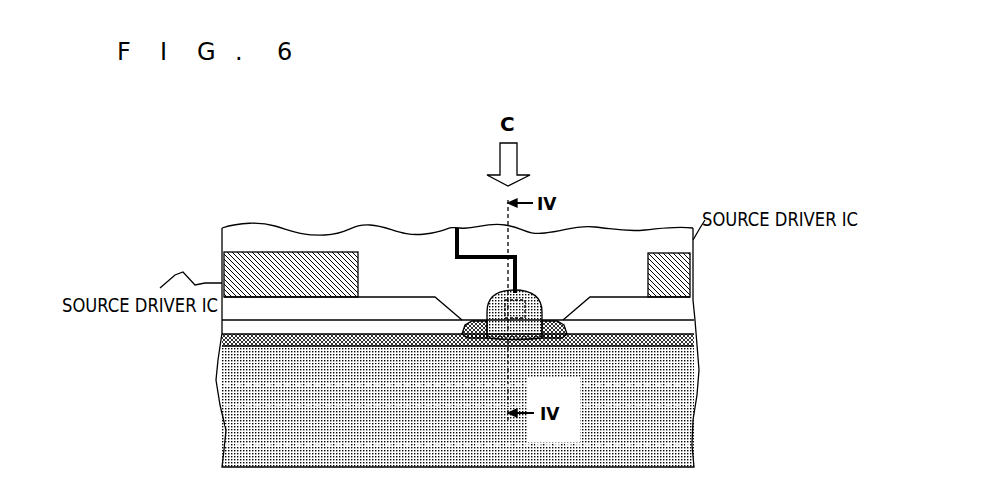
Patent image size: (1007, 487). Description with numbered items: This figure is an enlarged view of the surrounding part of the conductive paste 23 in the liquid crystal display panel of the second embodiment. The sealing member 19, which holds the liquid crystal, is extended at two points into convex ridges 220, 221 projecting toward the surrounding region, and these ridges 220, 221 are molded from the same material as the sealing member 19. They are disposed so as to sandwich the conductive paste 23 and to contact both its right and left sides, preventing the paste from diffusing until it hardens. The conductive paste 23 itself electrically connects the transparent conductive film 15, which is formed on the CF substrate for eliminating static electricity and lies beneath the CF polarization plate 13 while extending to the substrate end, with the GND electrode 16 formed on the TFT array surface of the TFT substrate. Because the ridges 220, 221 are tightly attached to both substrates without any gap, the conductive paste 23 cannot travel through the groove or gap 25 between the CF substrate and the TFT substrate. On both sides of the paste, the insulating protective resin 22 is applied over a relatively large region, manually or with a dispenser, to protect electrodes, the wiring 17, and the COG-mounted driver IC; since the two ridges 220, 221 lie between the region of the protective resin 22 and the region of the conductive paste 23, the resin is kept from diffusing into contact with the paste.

The CF polarization plate 13 is at (488, 406).
The transparent conductive film 15 is at (491, 297).
The GND electrode 16 is at (544, 253).
The wiring 17 is at (486, 230).
The sealing member 19 is at (492, 359).
The protective resin 22 is at (458, 296).
The conductive paste 23 is at (548, 255).
The gap 25 is at (447, 369).
The ridge 220 is at (624, 245).
The ridge 221 is at (420, 246).